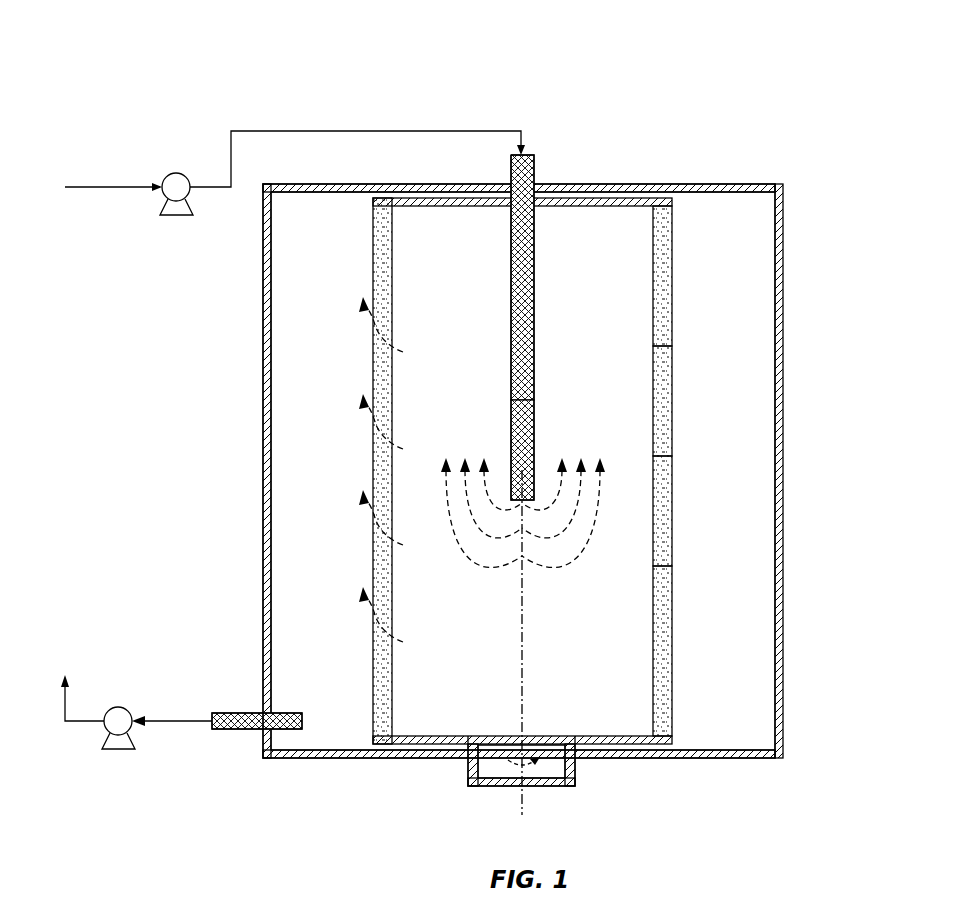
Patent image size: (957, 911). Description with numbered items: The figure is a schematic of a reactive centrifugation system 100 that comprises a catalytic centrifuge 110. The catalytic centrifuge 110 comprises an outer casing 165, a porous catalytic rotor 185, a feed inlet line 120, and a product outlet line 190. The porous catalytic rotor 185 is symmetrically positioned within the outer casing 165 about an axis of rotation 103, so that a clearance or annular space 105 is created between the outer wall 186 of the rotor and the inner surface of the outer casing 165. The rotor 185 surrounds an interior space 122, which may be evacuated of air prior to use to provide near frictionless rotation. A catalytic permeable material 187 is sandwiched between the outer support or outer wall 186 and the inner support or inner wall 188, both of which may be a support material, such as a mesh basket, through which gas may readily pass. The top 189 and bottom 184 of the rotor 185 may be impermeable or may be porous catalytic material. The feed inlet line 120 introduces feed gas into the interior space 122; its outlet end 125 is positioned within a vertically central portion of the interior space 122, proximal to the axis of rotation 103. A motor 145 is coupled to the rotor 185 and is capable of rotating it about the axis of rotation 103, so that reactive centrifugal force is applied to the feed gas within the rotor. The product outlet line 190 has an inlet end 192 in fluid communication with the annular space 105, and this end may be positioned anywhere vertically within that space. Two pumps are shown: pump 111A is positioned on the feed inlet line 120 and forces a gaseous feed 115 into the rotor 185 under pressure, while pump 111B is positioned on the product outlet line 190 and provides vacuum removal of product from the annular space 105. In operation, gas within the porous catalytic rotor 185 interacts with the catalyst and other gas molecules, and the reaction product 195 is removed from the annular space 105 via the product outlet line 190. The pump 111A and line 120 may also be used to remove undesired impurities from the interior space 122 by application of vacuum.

The reactive centrifugation system 100 is at (157, 44).
The catalytic centrifuge 110 is at (214, 432).
The outer casing 165 is at (783, 345).
The annular space 105 is at (740, 324).
The interior space 122 is at (610, 312).
The top of rotor 189 is at (650, 198).
The bottom of rotor 184 is at (408, 745).
The porous catalytic rotor 185 is at (662, 270).
The outer wall 186 is at (672, 398).
The catalytic permeable material 187 is at (661, 497).
The inner wall 188 is at (653, 590).
The gaseous feed 115 is at (378, 131).
The pump 111A is at (178, 173).
The feed inlet line 120 is at (532, 170).
The outlet end 125 is at (530, 440).
The motor 145 is at (577, 770).
The axis of rotation 103 is at (522, 798).
The inlet end 192 is at (285, 720).
The product outlet line 190 is at (237, 713).
The reaction product 195 is at (185, 727).
The pump 111B is at (117, 707).